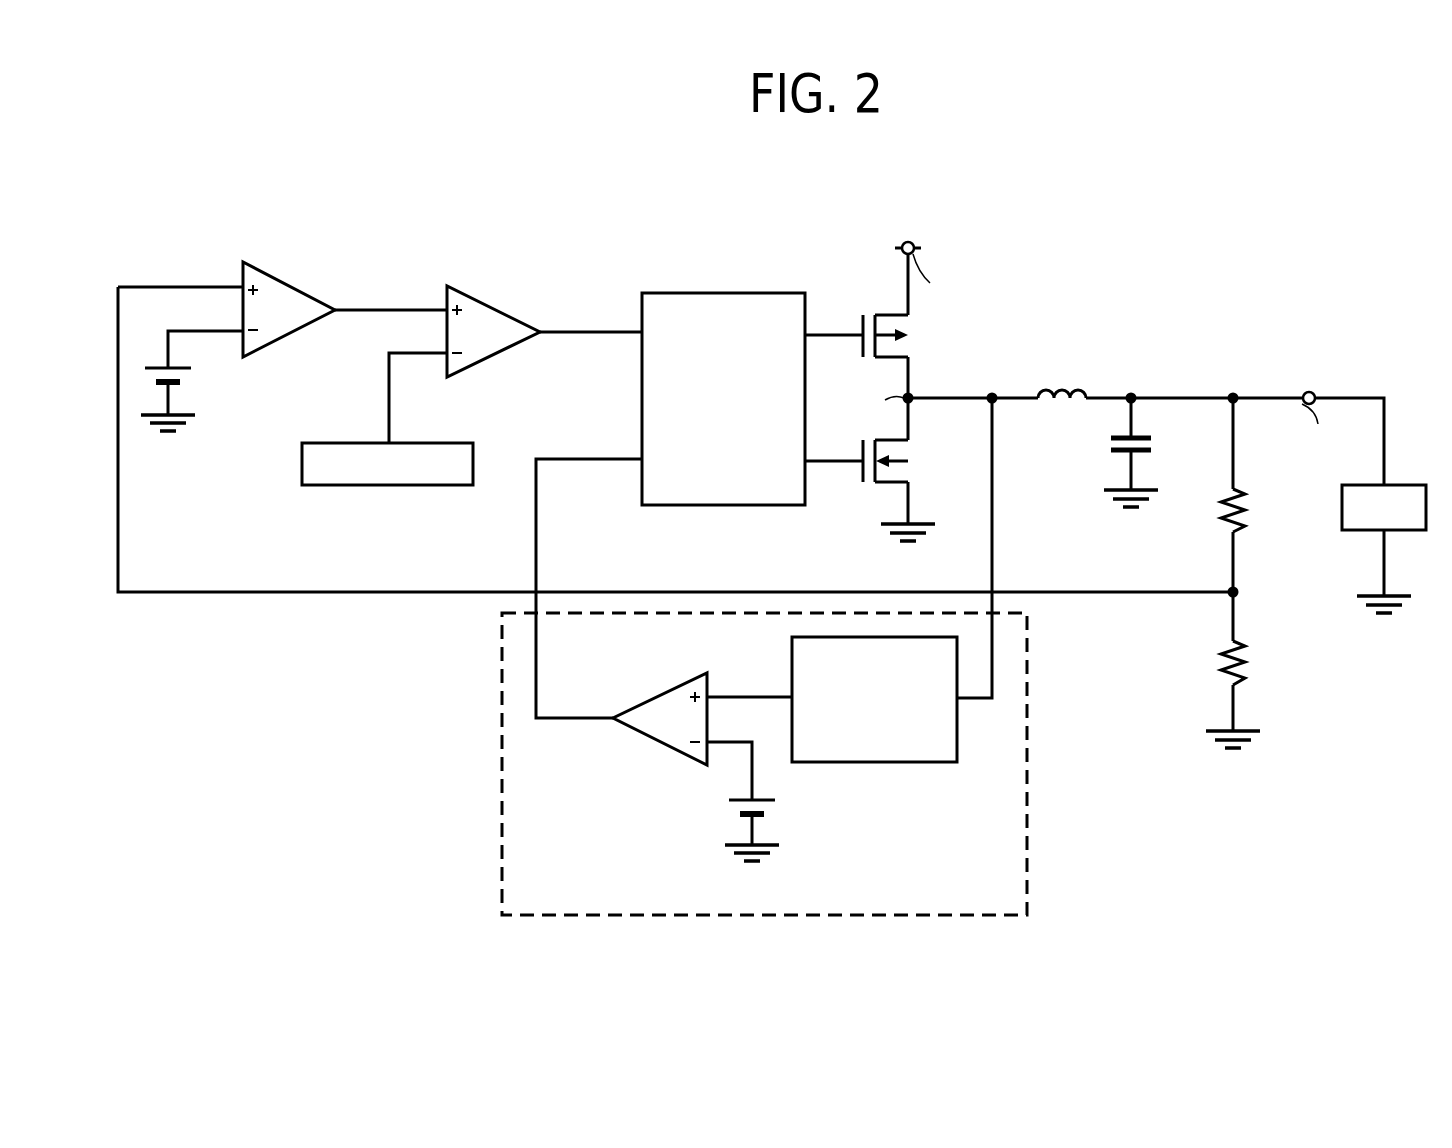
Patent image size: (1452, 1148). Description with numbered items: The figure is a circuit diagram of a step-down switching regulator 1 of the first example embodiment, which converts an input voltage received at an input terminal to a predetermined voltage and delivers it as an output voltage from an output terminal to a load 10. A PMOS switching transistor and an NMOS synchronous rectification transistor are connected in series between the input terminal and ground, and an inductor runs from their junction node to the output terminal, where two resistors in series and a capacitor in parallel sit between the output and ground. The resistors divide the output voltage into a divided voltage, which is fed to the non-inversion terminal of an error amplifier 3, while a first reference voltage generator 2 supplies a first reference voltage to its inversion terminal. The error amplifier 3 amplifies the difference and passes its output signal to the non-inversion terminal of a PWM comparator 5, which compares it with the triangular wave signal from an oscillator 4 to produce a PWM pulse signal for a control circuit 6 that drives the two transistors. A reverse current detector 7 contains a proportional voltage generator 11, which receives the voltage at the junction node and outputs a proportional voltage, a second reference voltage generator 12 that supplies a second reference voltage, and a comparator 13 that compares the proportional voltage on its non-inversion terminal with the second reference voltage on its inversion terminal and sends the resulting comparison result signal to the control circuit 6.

The switching regulator 1 is at (1066, 262).
The first reference voltage generator 2 is at (198, 376).
The error amplifier 3 is at (270, 268).
The oscillator 4 is at (430, 486).
The PWM comparator 5 is at (478, 296).
The control circuit 6 is at (760, 292).
The reverse current detector 7 is at (489, 791).
The load 10 is at (1400, 485).
The proportional voltage generator 11 is at (917, 762).
The second reference voltage generator 12 is at (725, 811).
The comparator 13 is at (658, 748).